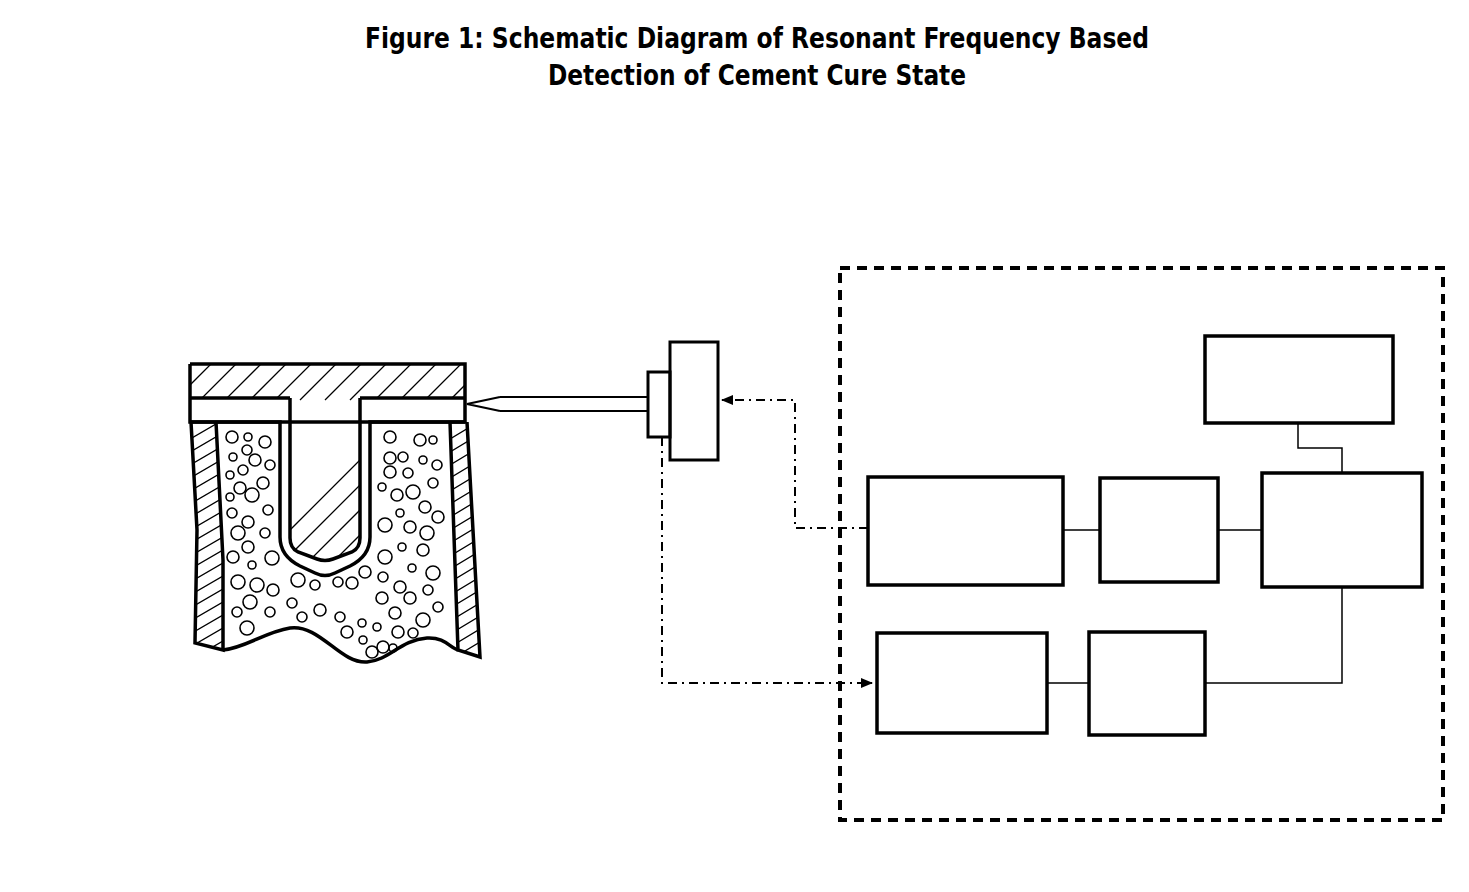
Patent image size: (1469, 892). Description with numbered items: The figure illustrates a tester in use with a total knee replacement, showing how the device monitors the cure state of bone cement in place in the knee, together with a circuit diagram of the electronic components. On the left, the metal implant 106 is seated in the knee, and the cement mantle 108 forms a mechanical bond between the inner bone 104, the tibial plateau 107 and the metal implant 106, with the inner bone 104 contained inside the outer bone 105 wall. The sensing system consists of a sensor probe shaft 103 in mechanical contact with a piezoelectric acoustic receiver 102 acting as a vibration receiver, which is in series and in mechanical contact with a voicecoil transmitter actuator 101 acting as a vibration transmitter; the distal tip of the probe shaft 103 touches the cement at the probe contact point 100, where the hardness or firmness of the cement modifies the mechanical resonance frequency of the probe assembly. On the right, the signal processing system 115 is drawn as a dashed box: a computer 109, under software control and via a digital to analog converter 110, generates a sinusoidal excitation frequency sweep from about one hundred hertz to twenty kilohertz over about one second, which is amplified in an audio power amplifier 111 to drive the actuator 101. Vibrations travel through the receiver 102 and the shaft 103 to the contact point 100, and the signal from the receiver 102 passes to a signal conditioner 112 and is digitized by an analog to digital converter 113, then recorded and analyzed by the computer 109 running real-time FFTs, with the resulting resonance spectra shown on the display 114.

The probe contact point 100 is at (470, 396).
The voicecoil transmitter actuator 101 is at (718, 338).
The piezoelectric acoustic receiver 102 is at (644, 433).
The sensor probe shaft 103 is at (574, 393).
The inner bone 104 is at (321, 643).
The outer bone 105 is at (485, 660).
The metal implant 106 is at (379, 355).
The tibial plateau 107 is at (186, 422).
The cement mantle 108 is at (373, 405).
The computer 109 is at (1342, 530).
The digital to analog converter (DAC) 110 is at (1159, 530).
The amplifier 111 is at (965, 531).
The signal conditioner 112 is at (962, 683).
The analog to digital converter (ADC) 113 is at (1147, 683).
The screen/display 114 is at (1299, 379).
The signal processing system 115 is at (1141, 544).